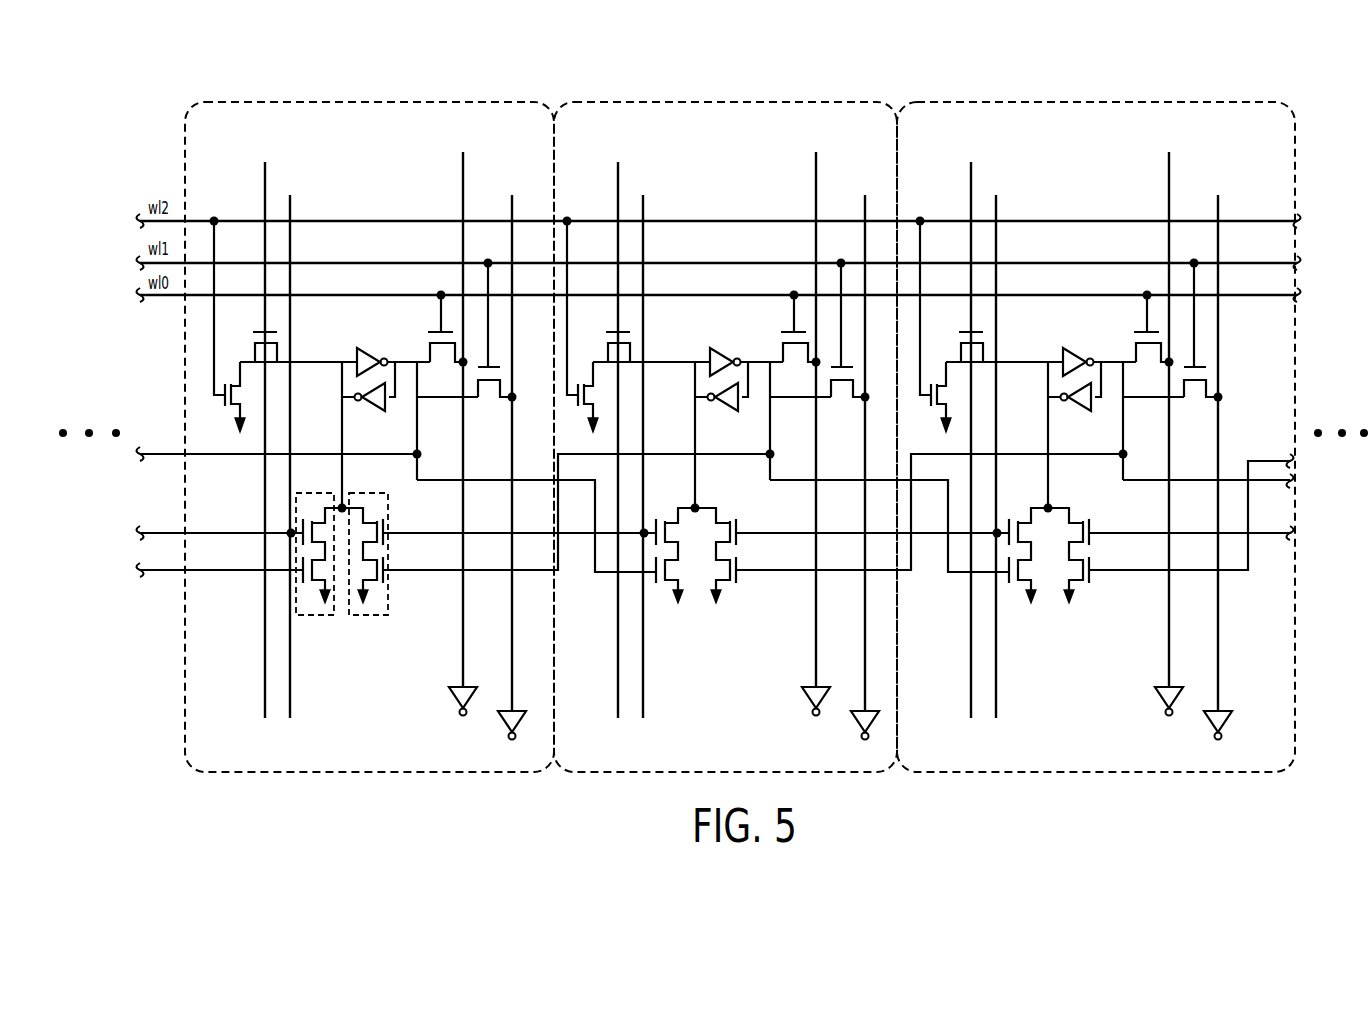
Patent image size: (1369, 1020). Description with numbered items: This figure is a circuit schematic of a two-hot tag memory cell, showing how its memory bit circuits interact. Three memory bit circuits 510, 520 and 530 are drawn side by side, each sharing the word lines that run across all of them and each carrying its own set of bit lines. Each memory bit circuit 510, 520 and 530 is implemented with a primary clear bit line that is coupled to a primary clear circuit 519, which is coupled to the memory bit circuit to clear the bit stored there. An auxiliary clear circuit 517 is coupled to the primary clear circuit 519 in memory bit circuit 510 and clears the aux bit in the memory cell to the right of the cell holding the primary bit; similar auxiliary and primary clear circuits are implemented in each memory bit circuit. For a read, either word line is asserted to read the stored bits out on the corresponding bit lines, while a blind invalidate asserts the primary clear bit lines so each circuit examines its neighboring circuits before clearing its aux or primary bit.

The memory bit circuit 510 is at (455, 409).
The memory bit circuit 520 is at (745, 98).
The memory bit circuit 530 is at (1097, 98).
The primary clear circuit 519 is at (317, 618).
The auxiliary clear circuit 517 is at (372, 618).